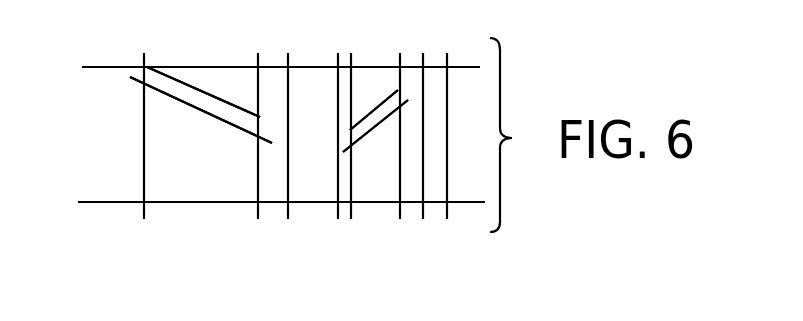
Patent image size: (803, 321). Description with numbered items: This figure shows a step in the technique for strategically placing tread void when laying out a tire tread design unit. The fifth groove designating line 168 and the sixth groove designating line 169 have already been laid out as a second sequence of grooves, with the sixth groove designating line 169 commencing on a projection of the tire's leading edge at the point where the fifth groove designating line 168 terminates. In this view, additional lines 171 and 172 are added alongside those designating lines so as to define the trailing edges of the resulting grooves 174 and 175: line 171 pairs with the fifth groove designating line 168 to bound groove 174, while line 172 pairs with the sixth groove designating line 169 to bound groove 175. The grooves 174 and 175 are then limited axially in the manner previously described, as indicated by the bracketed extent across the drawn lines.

The fifth groove designating line 168 is at (192, 90).
The additional line 171 is at (193, 108).
The groove 174 is at (173, 88).
The sixth groove designating line 169 is at (380, 106).
The additional line 172 is at (369, 137).
The groove 175 is at (388, 112).